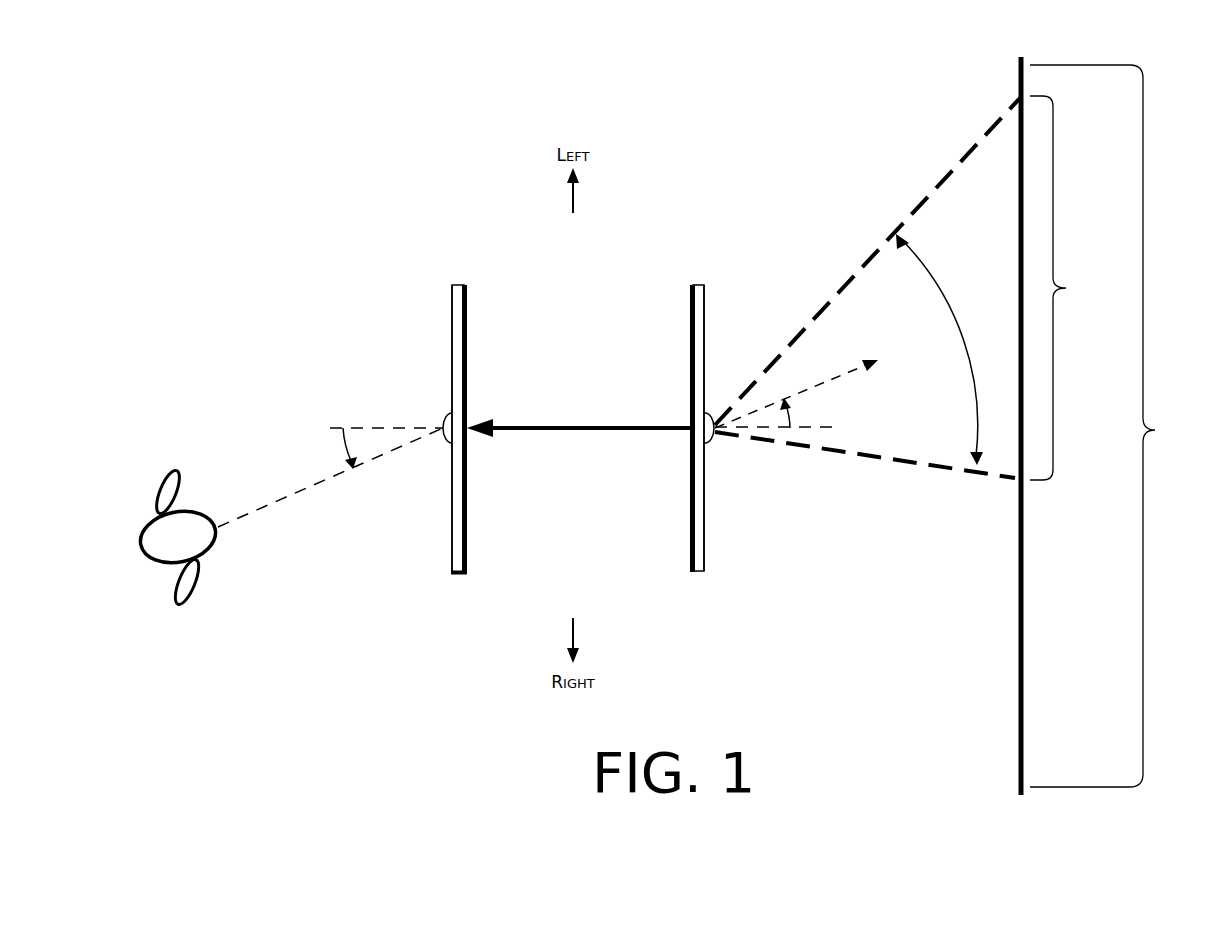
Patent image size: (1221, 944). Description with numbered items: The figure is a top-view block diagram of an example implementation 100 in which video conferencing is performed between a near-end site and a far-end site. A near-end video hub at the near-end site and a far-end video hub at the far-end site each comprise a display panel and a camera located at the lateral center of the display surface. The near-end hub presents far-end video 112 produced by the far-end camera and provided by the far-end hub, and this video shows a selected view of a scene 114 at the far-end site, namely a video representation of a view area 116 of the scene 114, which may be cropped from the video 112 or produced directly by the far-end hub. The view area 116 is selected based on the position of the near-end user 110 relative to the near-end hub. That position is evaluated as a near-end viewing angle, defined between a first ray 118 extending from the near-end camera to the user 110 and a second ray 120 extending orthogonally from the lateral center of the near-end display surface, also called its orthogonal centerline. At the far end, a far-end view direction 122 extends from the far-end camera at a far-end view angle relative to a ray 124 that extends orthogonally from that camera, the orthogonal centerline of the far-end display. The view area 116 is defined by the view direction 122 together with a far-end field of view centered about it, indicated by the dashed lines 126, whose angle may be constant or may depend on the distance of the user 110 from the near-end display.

The example implementation 100 is at (205, 86).
The near-end user 110 is at (195, 516).
The far-end video 112 is at (582, 428).
The scene 114 is at (1113, 426).
The view area 116 is at (1071, 288).
The first ray 118 is at (327, 481).
The second ray 120 is at (353, 428).
The far-end view direction 122 is at (848, 365).
The ray 124 is at (815, 429).
The dashed lines 126 is at (860, 264).